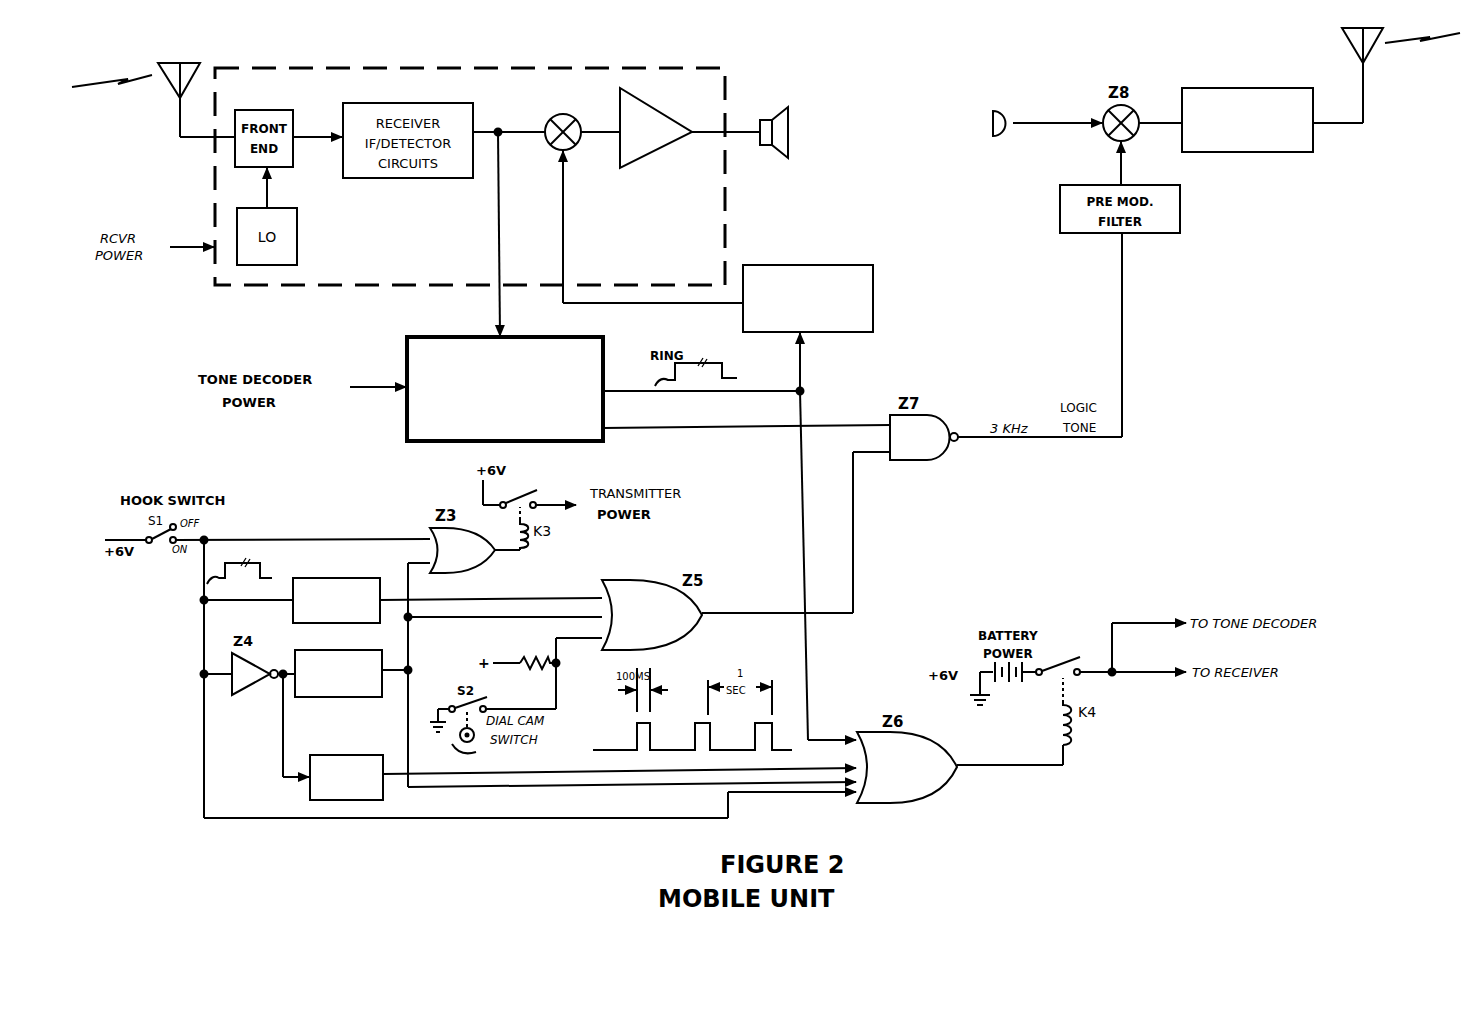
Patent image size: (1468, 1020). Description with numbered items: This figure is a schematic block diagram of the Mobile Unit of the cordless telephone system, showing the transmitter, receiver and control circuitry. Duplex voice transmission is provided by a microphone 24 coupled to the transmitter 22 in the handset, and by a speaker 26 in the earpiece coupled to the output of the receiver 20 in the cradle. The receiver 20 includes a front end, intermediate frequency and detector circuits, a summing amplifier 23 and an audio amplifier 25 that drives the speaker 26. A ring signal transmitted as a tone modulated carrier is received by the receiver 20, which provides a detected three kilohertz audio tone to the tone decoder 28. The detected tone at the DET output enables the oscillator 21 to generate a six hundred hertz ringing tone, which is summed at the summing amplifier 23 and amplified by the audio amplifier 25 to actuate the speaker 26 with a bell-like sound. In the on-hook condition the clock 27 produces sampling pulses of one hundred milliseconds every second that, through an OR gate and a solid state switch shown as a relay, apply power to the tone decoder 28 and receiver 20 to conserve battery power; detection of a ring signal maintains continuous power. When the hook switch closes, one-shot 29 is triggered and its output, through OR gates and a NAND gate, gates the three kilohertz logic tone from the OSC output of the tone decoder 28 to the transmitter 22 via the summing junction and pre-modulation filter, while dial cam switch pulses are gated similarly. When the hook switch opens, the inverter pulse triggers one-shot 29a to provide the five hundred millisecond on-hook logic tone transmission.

The receiver 20 is at (470, 166).
The oscillator 21 is at (810, 265).
The transmitter 22 is at (1230, 88).
The summing amplifier 23 is at (556, 116).
The microphone 24 is at (990, 124).
The audio amplifier 25 is at (656, 108).
The speaker 26 is at (796, 127).
The clock 27 is at (354, 755).
The tone decoder 28 is at (412, 337).
The one-shot 29 is at (356, 578).
The one-shot 29a is at (354, 651).